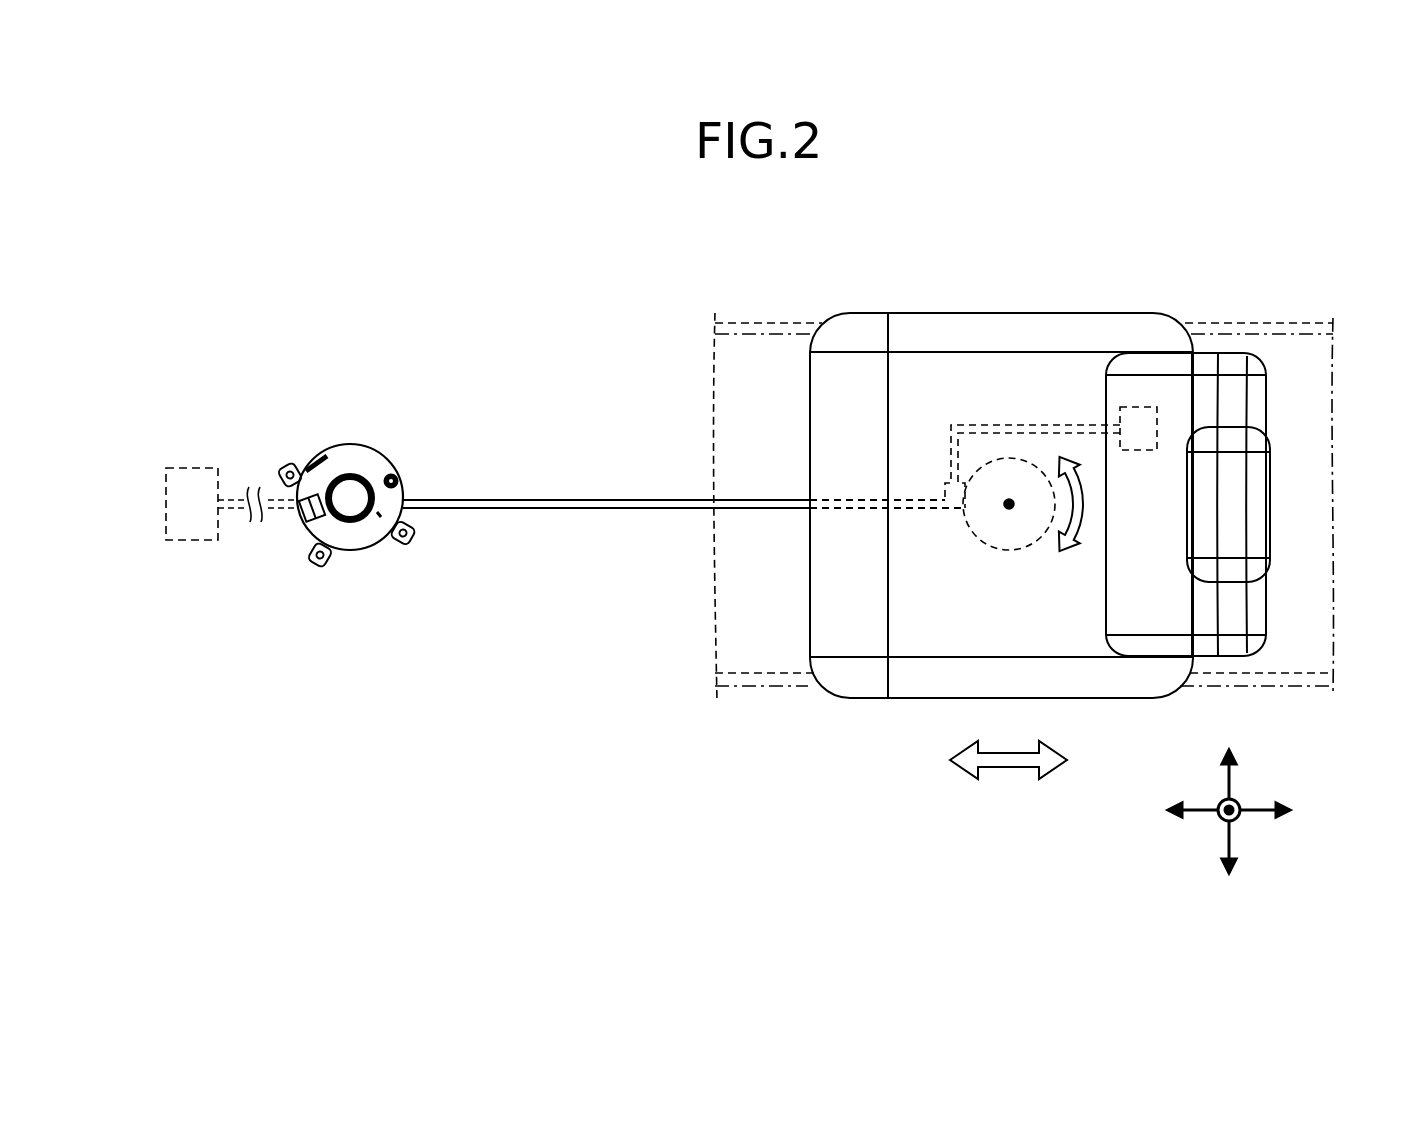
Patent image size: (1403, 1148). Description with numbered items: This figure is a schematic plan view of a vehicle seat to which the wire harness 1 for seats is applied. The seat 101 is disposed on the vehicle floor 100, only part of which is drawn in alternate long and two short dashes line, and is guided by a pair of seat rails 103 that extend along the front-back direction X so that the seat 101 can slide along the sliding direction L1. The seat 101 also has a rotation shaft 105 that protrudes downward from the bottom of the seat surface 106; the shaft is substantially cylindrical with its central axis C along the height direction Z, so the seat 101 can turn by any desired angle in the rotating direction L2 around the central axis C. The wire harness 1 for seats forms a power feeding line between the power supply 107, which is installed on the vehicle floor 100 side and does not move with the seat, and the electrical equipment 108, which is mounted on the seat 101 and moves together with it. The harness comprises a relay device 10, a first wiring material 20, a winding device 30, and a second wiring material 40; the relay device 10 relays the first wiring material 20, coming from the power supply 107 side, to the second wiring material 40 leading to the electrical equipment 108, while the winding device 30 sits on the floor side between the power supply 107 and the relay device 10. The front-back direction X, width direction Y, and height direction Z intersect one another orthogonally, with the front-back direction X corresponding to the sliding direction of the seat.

The wire harness for seats 1 is at (516, 452).
The relay device 10 is at (942, 485).
The first wiring material 20 is at (565, 523).
The winding device 30 is at (362, 560).
The second wiring material 40 is at (1035, 417).
The vehicle floor 100 is at (740, 411).
The seat 101 is at (1176, 290).
The seat rail 103 is at (763, 323).
The rotation shaft 105 is at (1015, 556).
The seat surface 106 is at (912, 637).
The power supply 107 is at (192, 540).
The electrical equipment 108 is at (1135, 407).
The central axis C is at (1009, 508).
The sliding direction L1 is at (1010, 770).
The rotating direction L2 is at (1087, 527).
The front-back direction X is at (1198, 812).
The width direction Y is at (1232, 778).
The height direction Z is at (1232, 815).